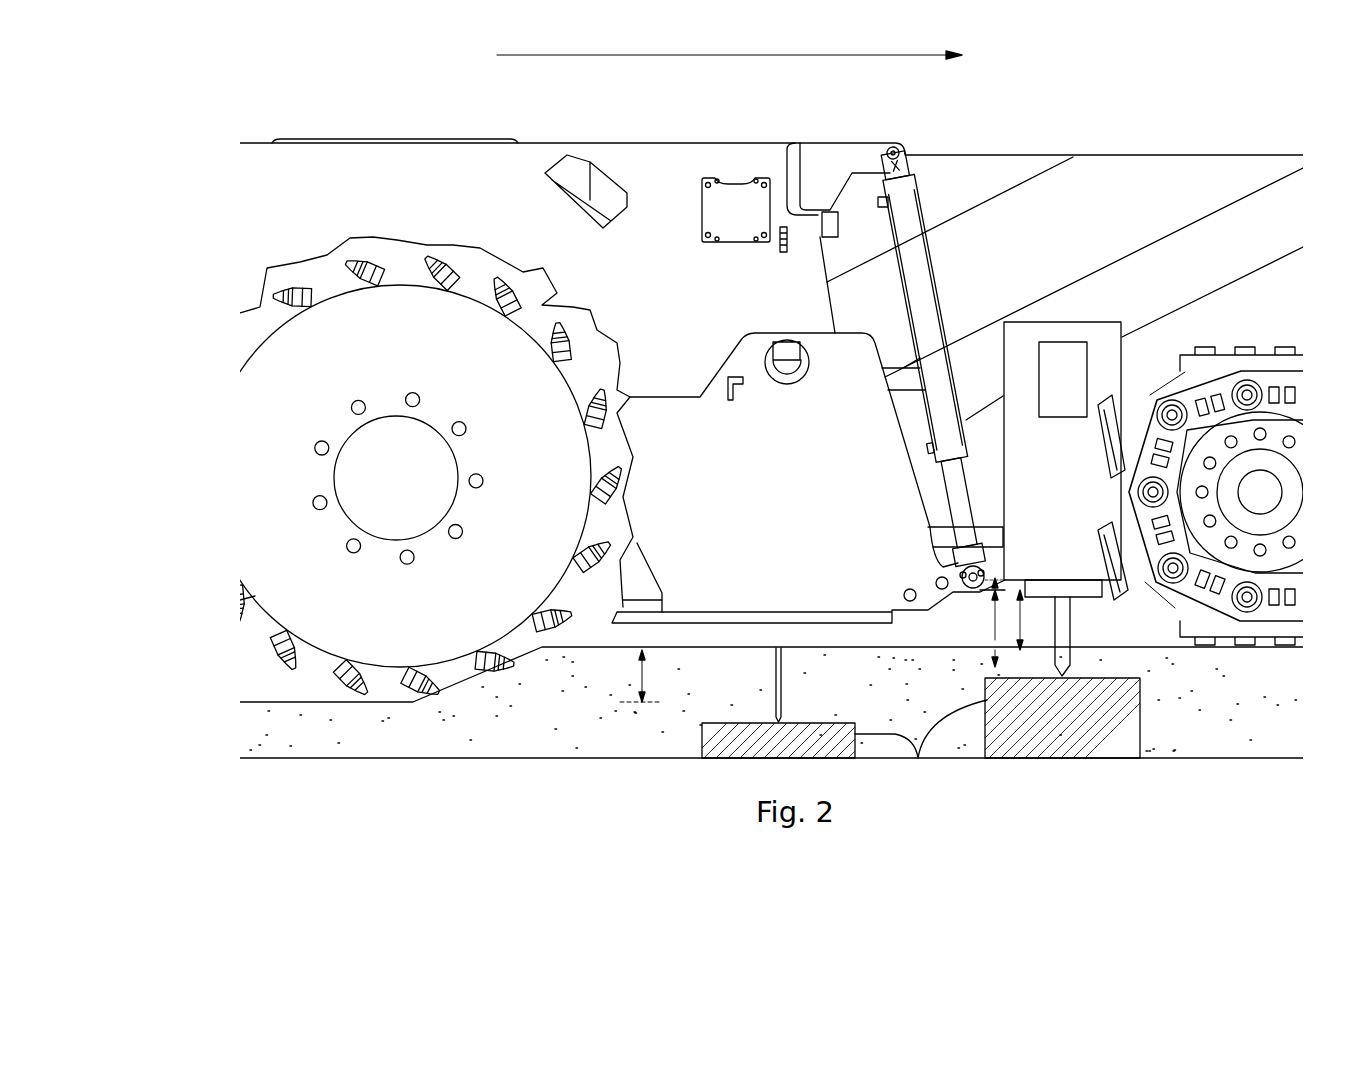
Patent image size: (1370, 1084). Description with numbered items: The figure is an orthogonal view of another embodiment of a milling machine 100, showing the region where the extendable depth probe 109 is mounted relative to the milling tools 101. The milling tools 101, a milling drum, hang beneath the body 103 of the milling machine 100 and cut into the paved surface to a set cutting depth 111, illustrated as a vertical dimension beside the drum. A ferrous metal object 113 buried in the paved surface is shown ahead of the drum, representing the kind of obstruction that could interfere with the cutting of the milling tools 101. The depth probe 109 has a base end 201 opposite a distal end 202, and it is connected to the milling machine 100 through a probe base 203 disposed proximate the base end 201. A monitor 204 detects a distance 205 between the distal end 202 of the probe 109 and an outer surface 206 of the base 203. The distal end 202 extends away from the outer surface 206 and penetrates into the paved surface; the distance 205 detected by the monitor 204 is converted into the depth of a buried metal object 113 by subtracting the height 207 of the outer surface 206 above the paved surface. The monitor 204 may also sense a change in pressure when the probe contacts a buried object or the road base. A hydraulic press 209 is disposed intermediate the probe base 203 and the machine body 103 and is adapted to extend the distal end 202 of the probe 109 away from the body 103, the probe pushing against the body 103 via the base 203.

The milling machine 100 is at (322, 85).
The milling tools 101 is at (393, 257).
The body 103 is at (975, 262).
The extendable depth probe 109 is at (1128, 377).
The cutting depth 111 is at (643, 673).
The ferrous metal object 113 is at (920, 720).
The base end 201 is at (1078, 295).
The distal end 202 is at (1090, 668).
The probe base 203 is at (1050, 527).
The monitor 204 is at (1028, 382).
The distance 205 is at (984, 621).
The outer surface 206 is at (1110, 585).
The height 207 is at (1022, 616).
The hydraulic press 209 is at (1093, 603).